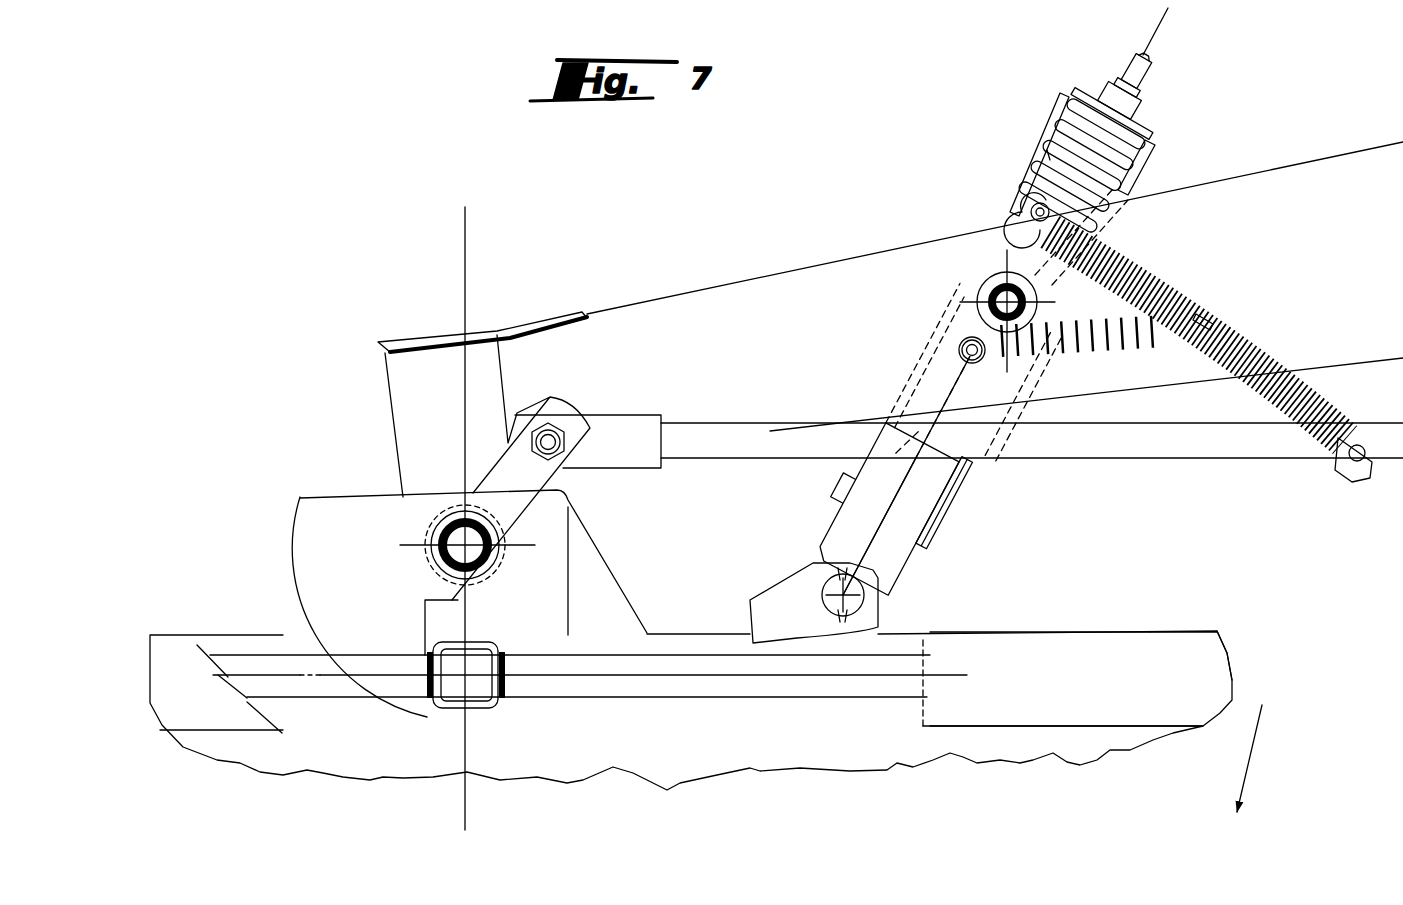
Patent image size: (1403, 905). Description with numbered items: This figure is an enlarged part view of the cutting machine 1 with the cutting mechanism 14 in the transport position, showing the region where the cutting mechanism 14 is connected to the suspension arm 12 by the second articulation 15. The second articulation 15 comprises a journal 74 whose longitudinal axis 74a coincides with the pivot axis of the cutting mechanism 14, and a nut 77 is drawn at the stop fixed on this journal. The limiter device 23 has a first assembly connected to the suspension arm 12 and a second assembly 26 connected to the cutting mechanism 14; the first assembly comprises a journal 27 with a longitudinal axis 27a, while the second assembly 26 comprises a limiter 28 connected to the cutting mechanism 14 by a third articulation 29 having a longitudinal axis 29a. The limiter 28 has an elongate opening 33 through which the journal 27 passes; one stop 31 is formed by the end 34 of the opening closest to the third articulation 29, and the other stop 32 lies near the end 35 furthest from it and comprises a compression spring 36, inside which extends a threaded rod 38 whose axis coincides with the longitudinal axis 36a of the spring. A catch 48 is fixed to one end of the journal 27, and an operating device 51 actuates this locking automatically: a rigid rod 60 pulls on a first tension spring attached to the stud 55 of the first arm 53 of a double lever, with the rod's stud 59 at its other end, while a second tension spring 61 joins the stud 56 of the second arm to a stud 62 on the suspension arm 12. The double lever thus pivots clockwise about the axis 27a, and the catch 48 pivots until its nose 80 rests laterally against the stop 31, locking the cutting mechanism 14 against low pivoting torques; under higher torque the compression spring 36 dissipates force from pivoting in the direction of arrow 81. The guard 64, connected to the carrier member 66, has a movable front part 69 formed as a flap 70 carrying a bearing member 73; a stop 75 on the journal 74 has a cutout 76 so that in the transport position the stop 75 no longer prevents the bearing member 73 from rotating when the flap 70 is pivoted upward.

The cutting machine 1 is at (735, 275).
The suspension arm 12 is at (655, 305).
The cutting mechanism 14 is at (1220, 667).
The second articulation 15 is at (434, 518).
The limiter device 23 is at (1153, 133).
The second assembly 26 is at (944, 503).
The journal 27 is at (1045, 318).
The longitudinal axis of the journal 27a is at (1197, 381).
The limiter 28 is at (928, 453).
The third articulation 29 is at (848, 589).
The longitudinal axis of the third articulation 29a is at (841, 588).
The stop 31 is at (907, 442).
The stop 32 is at (1110, 226).
The elongate opening 33 is at (906, 476).
The end of the elongate opening 34 is at (1010, 413).
The end of the elongate opening 35 is at (1048, 155).
The compression spring 36 is at (1155, 31).
The longitudinal axis of the compression spring 36a is at (1137, 69).
The threaded rod 38 is at (1122, 97).
The catch 48 is at (935, 350).
The operating device 51 is at (734, 415).
The first arm 53 is at (1035, 212).
The stud 55 is at (1082, 166).
The stud 56 is at (962, 343).
The stud 59 is at (1360, 463).
The rigid rod 60 is at (725, 448).
The second tension spring 61 is at (1183, 300).
The stud 62 is at (1203, 322).
The guard 64 is at (190, 625).
The carrier member 66 is at (307, 640).
The front part of the guard 69 is at (1185, 625).
The flap 70 is at (1075, 636).
The bearing member 73 is at (505, 685).
The journal 74 is at (385, 518).
The longitudinal axis of the journal 74a is at (437, 520).
The stop 75 is at (544, 436).
The cutout 76 is at (433, 630).
The nut 77 is at (548, 423).
The nose 80 is at (1023, 396).
The arrow 81 is at (1258, 737).